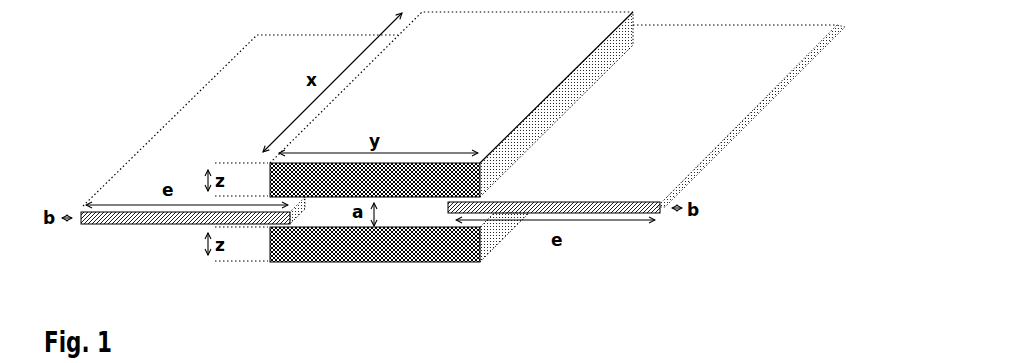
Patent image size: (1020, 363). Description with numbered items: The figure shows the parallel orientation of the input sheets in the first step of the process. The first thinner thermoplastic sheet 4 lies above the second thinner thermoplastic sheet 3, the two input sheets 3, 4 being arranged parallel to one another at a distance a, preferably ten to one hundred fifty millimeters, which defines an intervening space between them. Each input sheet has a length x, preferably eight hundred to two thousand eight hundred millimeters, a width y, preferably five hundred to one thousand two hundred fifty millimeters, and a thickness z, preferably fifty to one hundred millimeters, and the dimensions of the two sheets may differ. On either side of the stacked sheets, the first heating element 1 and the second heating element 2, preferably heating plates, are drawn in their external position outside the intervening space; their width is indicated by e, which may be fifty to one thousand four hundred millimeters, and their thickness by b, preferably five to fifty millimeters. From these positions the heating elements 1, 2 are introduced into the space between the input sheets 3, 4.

The first heating element 1 is at (603, 209).
The second heating element 2 is at (90, 225).
The second thinner thermoplastic sheet 3 is at (440, 258).
The first thinner thermoplastic sheet 4 is at (483, 190).